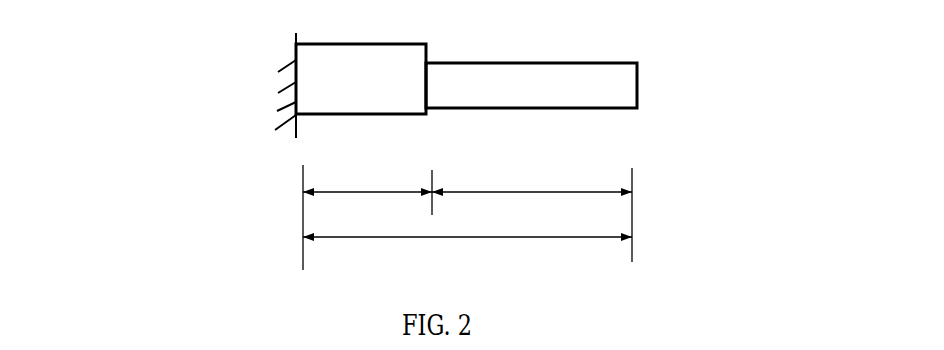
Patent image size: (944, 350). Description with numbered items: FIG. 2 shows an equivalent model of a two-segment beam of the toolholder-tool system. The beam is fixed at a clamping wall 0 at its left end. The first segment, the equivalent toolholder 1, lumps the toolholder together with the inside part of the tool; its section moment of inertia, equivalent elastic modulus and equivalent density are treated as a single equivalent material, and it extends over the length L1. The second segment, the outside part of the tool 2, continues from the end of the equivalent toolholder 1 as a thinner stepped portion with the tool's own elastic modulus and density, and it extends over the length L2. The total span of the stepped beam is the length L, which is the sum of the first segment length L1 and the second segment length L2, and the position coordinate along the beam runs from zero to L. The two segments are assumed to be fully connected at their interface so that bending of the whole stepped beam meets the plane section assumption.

The fixed wall / clamping support 0 is at (285, 85).
The equivalent toolholder 1 is at (278, 168).
The outside part of the tool 2 is at (718, 76).
The length of the first segment L1 is at (367, 176).
The length of the second segment L2 is at (532, 179).
The sum of length of the first segment and the second segment L is at (467, 251).